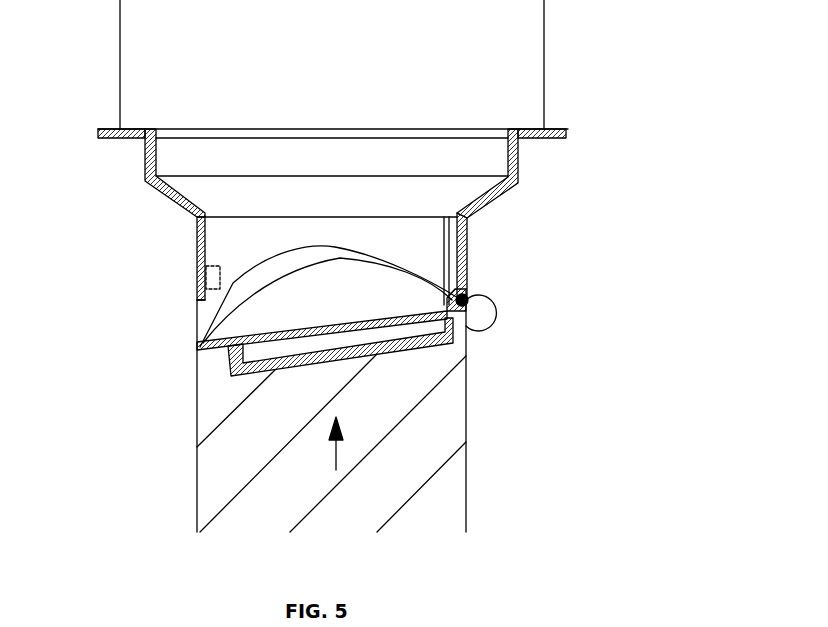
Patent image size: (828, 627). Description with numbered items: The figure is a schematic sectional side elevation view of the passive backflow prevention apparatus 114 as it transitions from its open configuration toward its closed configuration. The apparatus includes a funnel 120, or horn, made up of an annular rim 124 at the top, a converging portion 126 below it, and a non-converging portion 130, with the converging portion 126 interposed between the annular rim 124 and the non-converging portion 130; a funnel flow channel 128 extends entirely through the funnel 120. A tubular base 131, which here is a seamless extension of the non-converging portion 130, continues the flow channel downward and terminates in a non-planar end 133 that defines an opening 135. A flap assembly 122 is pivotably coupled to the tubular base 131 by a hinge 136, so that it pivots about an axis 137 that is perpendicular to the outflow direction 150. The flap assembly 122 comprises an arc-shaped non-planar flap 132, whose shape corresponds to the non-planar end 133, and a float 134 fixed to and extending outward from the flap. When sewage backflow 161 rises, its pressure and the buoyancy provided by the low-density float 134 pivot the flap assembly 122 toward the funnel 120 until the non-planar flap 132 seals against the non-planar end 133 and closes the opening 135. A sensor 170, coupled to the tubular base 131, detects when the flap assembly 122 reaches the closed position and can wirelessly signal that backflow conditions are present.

The passive backflow prevention apparatus 114 is at (568, 88).
The funnel 120 is at (528, 158).
The flap assembly 122 is at (187, 348).
The annular rim 124 is at (553, 129).
The converging portion 126 is at (182, 198).
The funnel flow channel 128 is at (427, 249).
The non-converging portion 130 is at (197, 245).
The tubular base 131 is at (187, 300).
The non-planar flap 132 is at (466, 293).
The non-planar end 133 is at (275, 268).
The float 134 is at (297, 365).
The opening 135 is at (242, 293).
The hinge 136 is at (482, 345).
The axis 137 is at (484, 293).
The outflow direction 150 is at (337, 458).
The backflow 161 is at (452, 508).
The sensor 170 is at (212, 282).